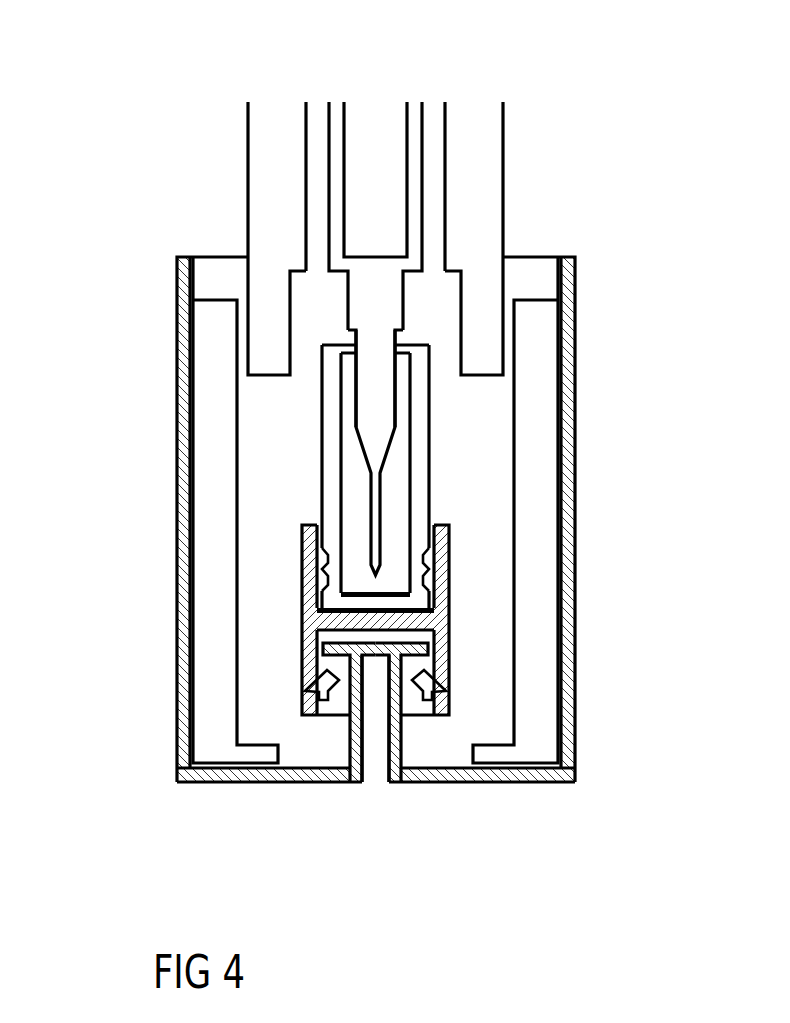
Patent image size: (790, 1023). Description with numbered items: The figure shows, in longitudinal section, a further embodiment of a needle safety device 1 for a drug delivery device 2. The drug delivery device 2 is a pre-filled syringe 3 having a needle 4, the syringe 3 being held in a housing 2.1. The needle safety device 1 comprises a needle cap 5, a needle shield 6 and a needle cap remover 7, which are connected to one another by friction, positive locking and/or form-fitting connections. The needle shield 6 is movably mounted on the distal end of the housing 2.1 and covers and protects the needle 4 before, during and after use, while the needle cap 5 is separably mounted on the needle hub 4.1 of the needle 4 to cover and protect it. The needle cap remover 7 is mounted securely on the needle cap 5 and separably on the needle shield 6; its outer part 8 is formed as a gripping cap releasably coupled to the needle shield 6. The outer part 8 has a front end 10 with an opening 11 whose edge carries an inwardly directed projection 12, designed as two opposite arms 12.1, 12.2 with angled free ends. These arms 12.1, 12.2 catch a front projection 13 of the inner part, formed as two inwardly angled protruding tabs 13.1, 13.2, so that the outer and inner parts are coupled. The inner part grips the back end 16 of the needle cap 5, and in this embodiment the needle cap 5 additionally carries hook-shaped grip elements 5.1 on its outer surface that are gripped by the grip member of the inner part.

The needle safety device 1 is at (150, 712).
The drug delivery device 2 is at (238, 100).
The housing 2.1 is at (485, 117).
The pre-filled syringe 3 is at (338, 113).
The needle 4 is at (378, 540).
The needle hub 4.1 is at (368, 382).
The needle cap 5 is at (332, 473).
The grip elements 5.1 is at (327, 548).
The needle shield 6 is at (545, 413).
The needle cap remover 7 is at (268, 792).
The outer part 8 is at (567, 466).
The front end 10 is at (528, 775).
The opening 11 is at (376, 767).
The projection 12 is at (346, 740).
The first opposite arm 12.1 is at (322, 663).
The second opposite arm 12.2 is at (432, 663).
The front projection 13 is at (422, 696).
The first protruding tab 13.1 is at (320, 685).
The second protruding tab 13.2 is at (447, 683).
The back end of the needle cap 16 is at (412, 345).